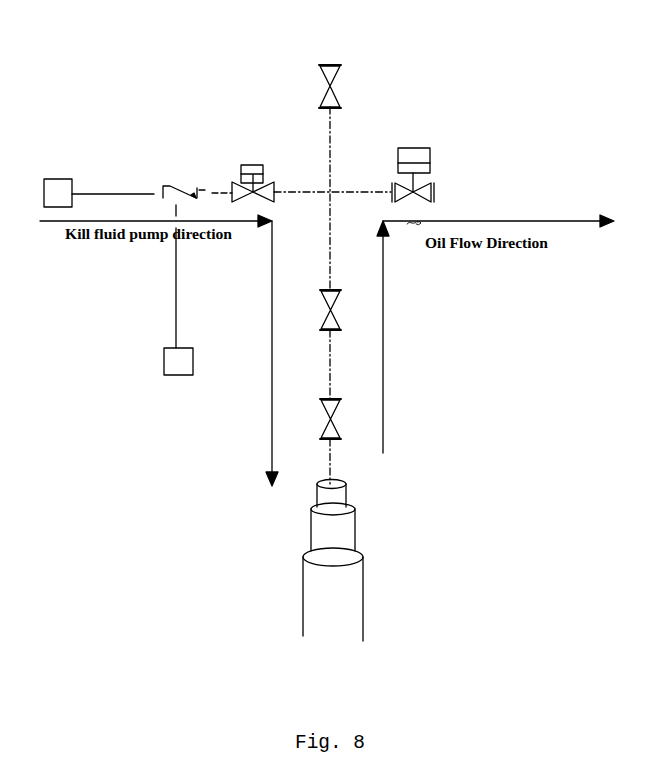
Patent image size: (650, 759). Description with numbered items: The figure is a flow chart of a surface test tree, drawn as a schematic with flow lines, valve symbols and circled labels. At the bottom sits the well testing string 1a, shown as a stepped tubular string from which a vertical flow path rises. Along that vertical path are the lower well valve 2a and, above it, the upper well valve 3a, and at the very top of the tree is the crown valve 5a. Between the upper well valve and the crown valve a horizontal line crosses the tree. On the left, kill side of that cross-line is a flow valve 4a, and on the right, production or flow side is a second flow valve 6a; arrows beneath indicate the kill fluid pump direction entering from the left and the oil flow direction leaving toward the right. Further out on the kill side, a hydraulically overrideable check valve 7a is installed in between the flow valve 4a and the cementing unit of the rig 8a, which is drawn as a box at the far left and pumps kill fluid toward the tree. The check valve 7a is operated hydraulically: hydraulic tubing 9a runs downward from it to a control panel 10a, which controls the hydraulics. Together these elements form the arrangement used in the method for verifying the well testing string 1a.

The well testing string 1a is at (339, 543).
The lower well valve 2a is at (316, 404).
The upper well valve 3a is at (316, 294).
The flow valve 4a is at (253, 157).
The crown valve 5a is at (329, 64).
The flow valve 6a is at (413, 148).
The hydraulically overrideable check valve 7a is at (184, 164).
The cementing unit of the rig 8a is at (99, 177).
The hydraulic tubing 9a is at (154, 276).
The control panel 10a is at (171, 380).